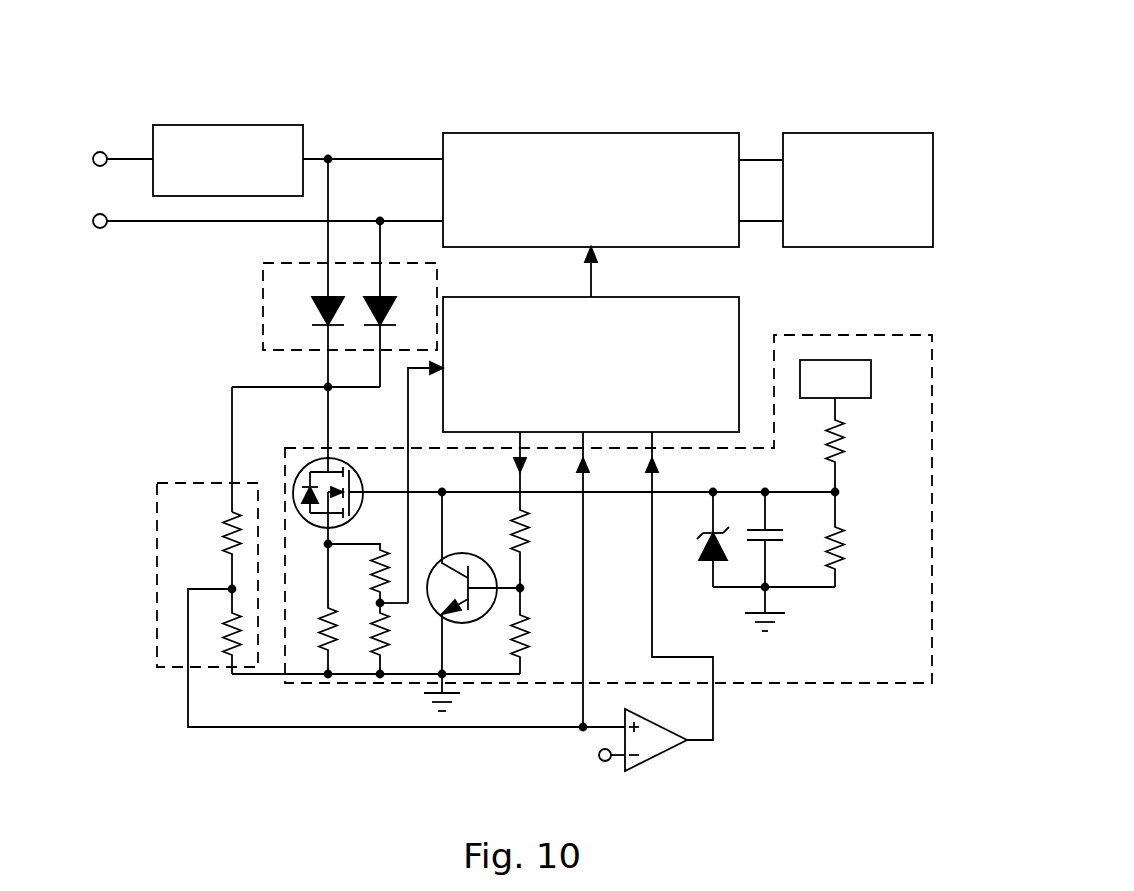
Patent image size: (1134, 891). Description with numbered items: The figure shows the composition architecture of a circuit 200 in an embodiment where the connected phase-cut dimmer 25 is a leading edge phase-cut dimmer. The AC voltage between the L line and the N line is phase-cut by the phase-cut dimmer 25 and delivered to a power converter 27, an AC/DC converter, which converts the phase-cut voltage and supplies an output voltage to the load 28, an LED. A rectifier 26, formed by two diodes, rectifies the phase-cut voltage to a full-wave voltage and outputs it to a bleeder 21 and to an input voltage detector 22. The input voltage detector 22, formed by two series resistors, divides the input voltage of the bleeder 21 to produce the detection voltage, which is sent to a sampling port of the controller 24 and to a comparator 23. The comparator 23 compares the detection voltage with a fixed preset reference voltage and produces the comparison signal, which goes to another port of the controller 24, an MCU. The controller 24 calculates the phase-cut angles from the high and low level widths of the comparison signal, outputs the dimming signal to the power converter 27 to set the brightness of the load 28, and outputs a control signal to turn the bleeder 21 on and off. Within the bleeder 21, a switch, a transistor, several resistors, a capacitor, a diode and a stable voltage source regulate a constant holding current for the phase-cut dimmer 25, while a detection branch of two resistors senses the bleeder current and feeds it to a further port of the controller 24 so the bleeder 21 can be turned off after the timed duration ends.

The circuit 200 is at (502, 50).
The bleeder 21 is at (930, 320).
The input voltage detector 22 is at (157, 527).
The comparator 23 is at (660, 752).
The controller 24 is at (713, 297).
The phase-cut dimmer 25 is at (297, 125).
The rectifier 26 is at (262, 291).
The power converter 27 is at (640, 133).
The load 28 is at (903, 140).